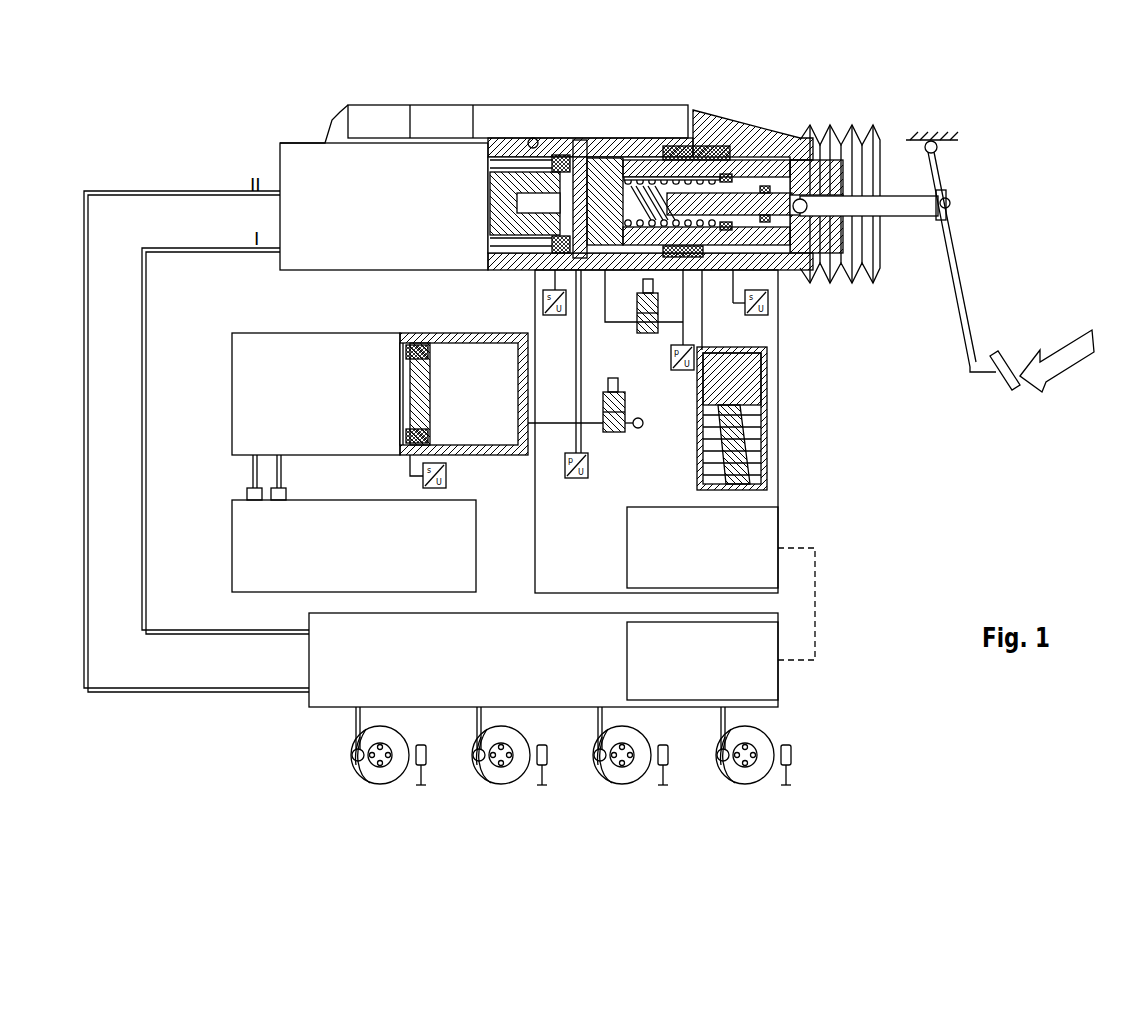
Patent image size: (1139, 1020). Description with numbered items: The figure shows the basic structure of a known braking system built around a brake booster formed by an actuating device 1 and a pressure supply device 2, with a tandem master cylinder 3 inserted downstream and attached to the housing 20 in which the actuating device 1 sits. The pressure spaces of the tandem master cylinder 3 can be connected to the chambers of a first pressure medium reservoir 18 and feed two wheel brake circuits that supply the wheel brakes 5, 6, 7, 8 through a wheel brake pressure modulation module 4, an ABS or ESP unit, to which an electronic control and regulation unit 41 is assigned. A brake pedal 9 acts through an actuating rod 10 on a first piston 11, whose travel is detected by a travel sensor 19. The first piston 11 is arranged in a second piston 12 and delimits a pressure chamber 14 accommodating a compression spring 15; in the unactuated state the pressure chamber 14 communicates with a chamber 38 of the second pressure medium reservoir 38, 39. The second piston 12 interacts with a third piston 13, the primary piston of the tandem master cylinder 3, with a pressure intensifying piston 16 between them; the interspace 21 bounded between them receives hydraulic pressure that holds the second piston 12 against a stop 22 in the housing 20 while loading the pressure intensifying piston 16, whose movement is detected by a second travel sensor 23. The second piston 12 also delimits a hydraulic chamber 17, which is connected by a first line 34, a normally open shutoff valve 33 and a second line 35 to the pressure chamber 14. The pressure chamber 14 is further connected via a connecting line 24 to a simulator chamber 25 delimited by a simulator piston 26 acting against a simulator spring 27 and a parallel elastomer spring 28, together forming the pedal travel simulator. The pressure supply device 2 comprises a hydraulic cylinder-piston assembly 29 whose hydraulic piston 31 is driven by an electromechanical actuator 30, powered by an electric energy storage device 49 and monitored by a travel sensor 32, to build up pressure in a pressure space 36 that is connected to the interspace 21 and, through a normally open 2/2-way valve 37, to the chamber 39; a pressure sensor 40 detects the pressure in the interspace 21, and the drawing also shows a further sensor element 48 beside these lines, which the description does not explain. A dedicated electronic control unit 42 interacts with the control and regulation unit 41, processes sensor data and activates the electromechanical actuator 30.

The actuating device 1 is at (665, 169).
The pressure supply device 2 is at (348, 417).
The tandem master cylinder 3 is at (318, 140).
The wheel brake pressure modulation module 4 is at (309, 664).
The wheel brake 5 is at (358, 773).
The wheel brake 6 is at (479, 773).
The wheel brake 7 is at (600, 773).
The wheel brake 8 is at (723, 773).
The brake pedal 9 is at (968, 296).
The actuating rod 10 is at (900, 215).
The first piston 11 is at (815, 188).
The second piston 12 is at (507, 195).
The third piston 13 is at (830, 130).
The pressure chamber 14 is at (630, 178).
The compression spring 15 is at (670, 196).
The pressure intensifying piston 16 is at (545, 190).
The hydraulic chamber 17 is at (647, 190).
The first pressure medium reservoir 18 is at (395, 112).
The travel sensor 19 is at (770, 300).
The housing 20 is at (758, 129).
The interspace 21 is at (578, 168).
The stop 22 is at (692, 162).
The second travel sensor 23 is at (555, 318).
The connecting line 24 is at (761, 314).
The simulator chamber 25 is at (782, 418).
The simulator piston 26 is at (768, 382).
The simulator spring 27 is at (768, 416).
The elastomer spring 28 is at (768, 456).
The hydraulic cylinder-piston assembly 29 is at (468, 417).
The electromechanical actuator 30 is at (232, 412).
The hydraulic piston 31 is at (420, 346).
The travel sensor 32 is at (447, 474).
The shutoff valve 33 is at (650, 336).
The first line 34 is at (582, 292).
The second line 35 is at (692, 303).
The pressure space 36 is at (478, 350).
The 2/2-way valve 37 is at (612, 434).
The chamber of second pressure medium reservoir 38 is at (602, 165).
The chamber of second pressure medium reservoir 39 is at (462, 114).
The pressure sensor 40 is at (579, 480).
The electronic control and regulation unit 41 is at (765, 683).
The electronic control unit 42 is at (765, 528).
The pressure sensor 48 is at (681, 373).
The electric energy storage device 49 is at (232, 548).